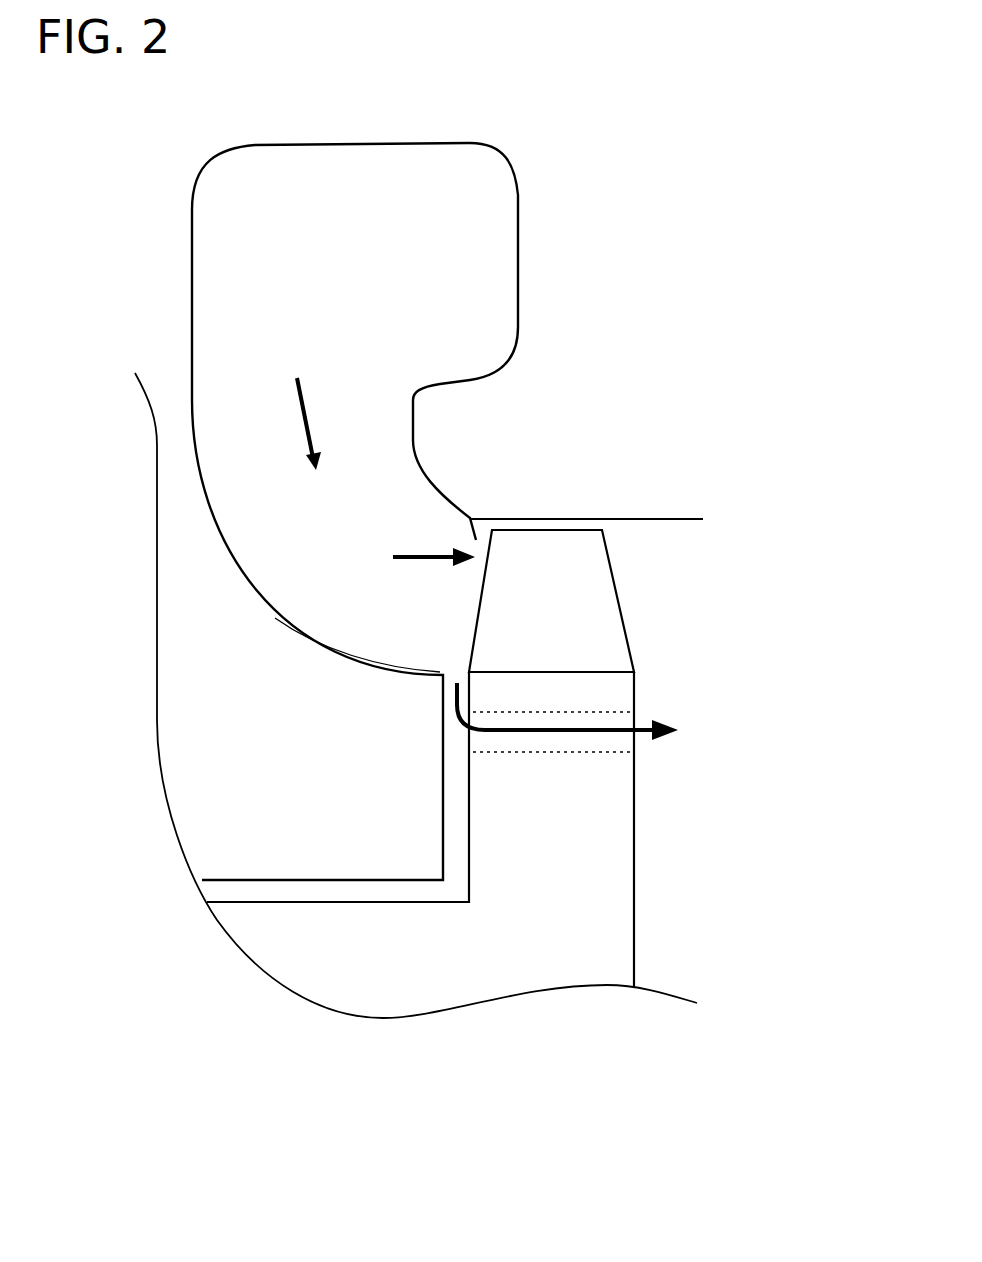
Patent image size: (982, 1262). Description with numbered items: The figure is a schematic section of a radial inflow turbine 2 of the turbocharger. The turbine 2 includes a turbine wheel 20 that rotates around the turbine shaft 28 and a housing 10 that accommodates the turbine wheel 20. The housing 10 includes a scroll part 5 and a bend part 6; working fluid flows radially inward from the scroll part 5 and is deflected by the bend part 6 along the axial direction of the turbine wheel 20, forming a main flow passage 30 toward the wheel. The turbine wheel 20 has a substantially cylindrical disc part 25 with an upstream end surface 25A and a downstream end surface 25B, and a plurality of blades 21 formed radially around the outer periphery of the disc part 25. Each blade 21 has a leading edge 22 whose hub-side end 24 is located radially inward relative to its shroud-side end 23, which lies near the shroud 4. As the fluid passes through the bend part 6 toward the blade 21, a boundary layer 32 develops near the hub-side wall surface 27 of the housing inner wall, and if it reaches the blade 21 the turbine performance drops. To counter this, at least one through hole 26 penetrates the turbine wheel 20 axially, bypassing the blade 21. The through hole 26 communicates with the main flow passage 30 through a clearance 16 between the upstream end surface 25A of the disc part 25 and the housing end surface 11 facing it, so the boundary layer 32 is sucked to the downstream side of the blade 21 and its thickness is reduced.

The radial inflow turbine 2 is at (640, 172).
The shroud 4 is at (563, 495).
The scroll part 5 is at (433, 215).
The bend part 6 is at (360, 662).
The housing 10 is at (202, 677).
The housing end surface 11 is at (443, 853).
The clearance 16 is at (457, 757).
The turbine wheel 20 is at (768, 538).
The blade 21 is at (607, 620).
The leading edge 22 is at (474, 515).
The shroud-side end 23 is at (489, 540).
The hub-side end 24 is at (469, 673).
The disc part 25 is at (602, 930).
The upstream end surface 25A is at (468, 817).
The downstream end surface 25B is at (635, 817).
The through hole 26 is at (612, 723).
The hub-side wall surface 27 is at (423, 672).
The turbine shaft 28 is at (333, 987).
The main flow passage 30 is at (418, 557).
The boundary layer 32 is at (328, 633).